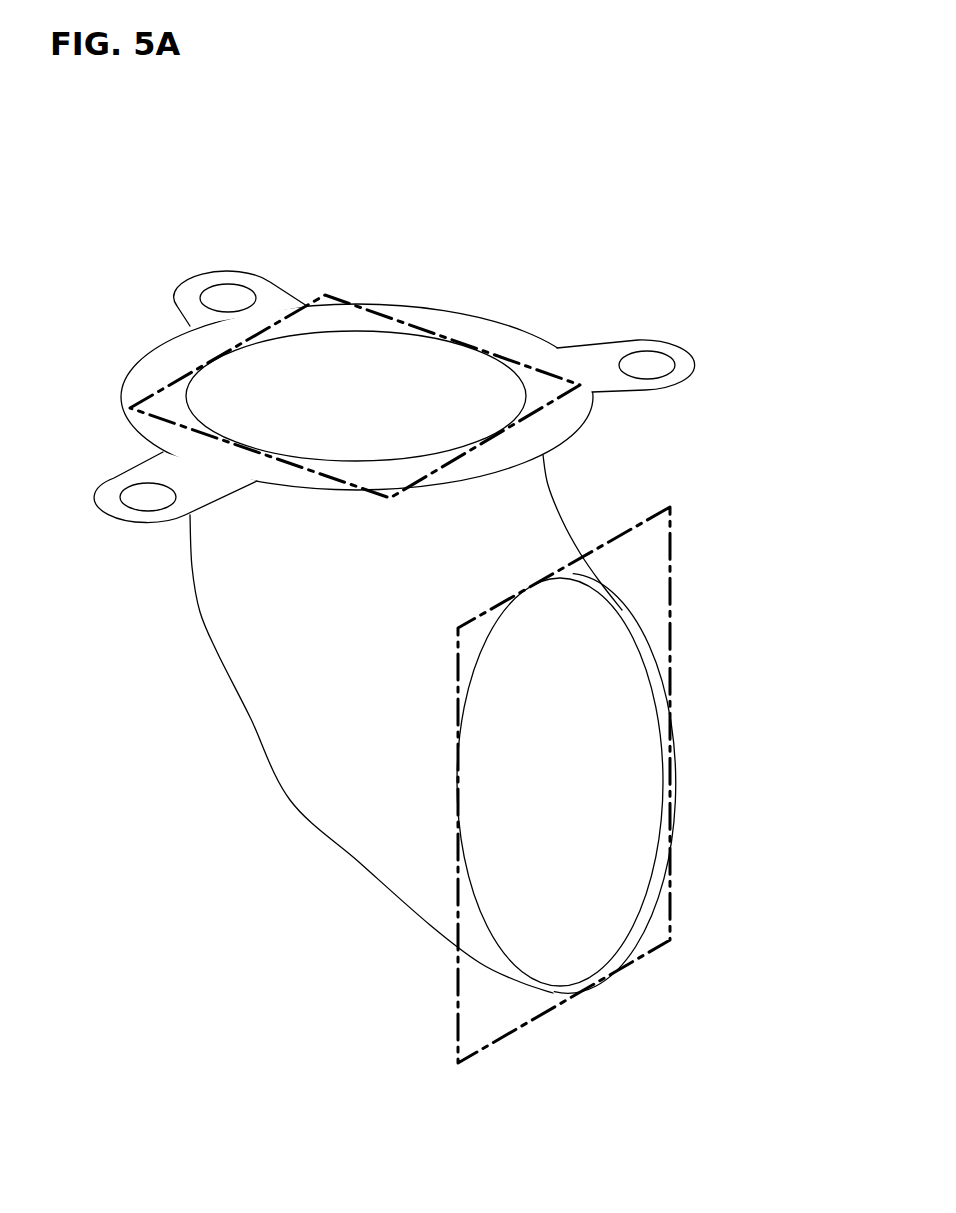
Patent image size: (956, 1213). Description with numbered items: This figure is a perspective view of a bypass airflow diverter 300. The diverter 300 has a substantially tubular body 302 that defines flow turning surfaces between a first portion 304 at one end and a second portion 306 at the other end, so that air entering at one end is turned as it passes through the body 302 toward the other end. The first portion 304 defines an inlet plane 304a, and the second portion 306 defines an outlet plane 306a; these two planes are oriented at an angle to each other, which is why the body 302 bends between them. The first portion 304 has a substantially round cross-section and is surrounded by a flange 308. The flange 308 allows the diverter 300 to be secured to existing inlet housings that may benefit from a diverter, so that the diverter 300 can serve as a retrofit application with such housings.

The airflow diverter 300 is at (270, 861).
The substantially tubular body 302 is at (380, 630).
The first portion 304 is at (374, 363).
The inlet plane 304a is at (543, 410).
The second portion 306 is at (616, 767).
The outlet plane 306a is at (672, 923).
The flange 308 is at (583, 372).